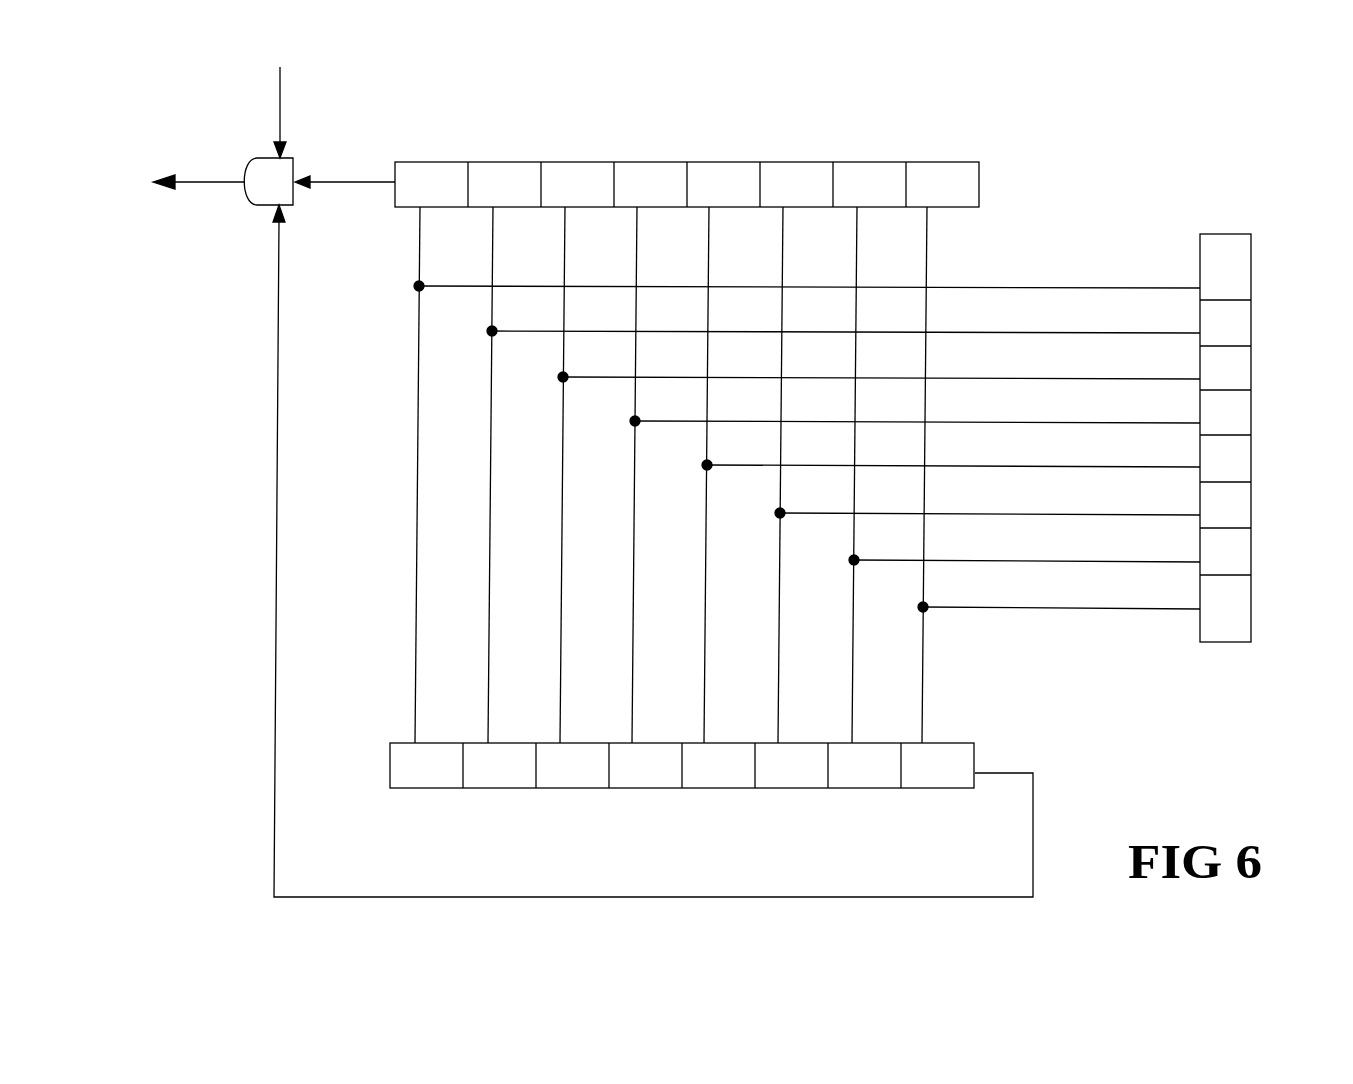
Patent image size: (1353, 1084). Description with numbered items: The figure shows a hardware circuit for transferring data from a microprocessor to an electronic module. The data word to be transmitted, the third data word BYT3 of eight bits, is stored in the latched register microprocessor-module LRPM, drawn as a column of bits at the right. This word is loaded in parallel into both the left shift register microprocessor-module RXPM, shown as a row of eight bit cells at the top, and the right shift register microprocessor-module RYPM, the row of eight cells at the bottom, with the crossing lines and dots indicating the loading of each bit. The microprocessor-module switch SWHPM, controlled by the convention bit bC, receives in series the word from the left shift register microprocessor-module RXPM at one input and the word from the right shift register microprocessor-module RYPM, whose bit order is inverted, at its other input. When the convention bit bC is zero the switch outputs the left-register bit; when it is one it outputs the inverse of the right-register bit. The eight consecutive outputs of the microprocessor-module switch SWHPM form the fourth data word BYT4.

The left shift register microprocessor-module RXPM is at (983, 187).
The right shift register microprocessor-module RYPM is at (388, 758).
The latched register microprocessor-module LRPM is at (1213, 240).
The microprocessor-module switch SWHPM is at (257, 192).
The third data word BYT3 is at (809, 269).
The fourth data word BYT4 is at (184, 159).
The convention bit bC is at (304, 112).